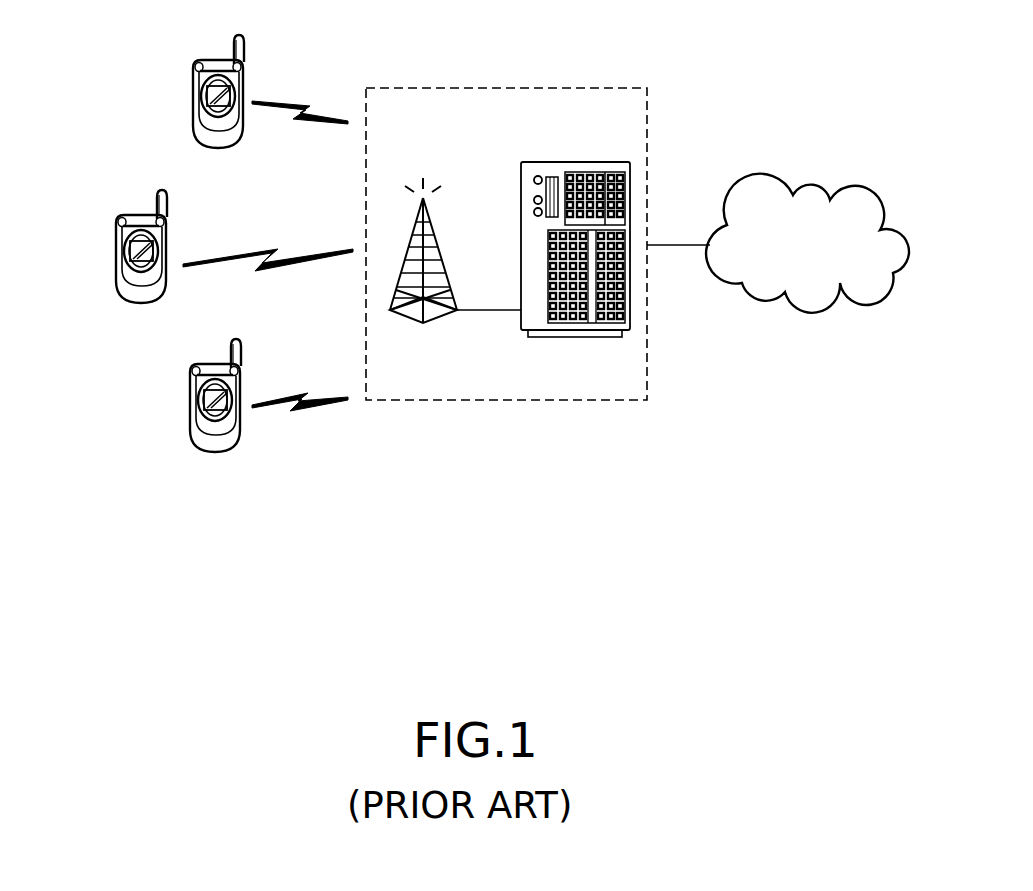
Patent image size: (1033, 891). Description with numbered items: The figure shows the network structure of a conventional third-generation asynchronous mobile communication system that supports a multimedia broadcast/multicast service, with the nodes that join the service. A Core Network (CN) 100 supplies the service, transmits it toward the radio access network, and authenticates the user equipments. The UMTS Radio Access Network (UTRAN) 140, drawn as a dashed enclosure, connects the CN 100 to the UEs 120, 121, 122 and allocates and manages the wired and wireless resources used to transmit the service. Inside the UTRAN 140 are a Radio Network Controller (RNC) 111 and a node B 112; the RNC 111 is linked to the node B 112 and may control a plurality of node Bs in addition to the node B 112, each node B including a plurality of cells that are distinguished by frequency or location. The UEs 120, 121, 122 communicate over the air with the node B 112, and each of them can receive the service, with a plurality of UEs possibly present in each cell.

The Core Network 100 is at (812, 187).
The Radio Network Controller 111 is at (577, 162).
The node B 112 is at (440, 258).
The UE 120 is at (192, 103).
The UE 121 is at (116, 260).
The UE 122 is at (190, 407).
The UTRAN 140 is at (558, 88).